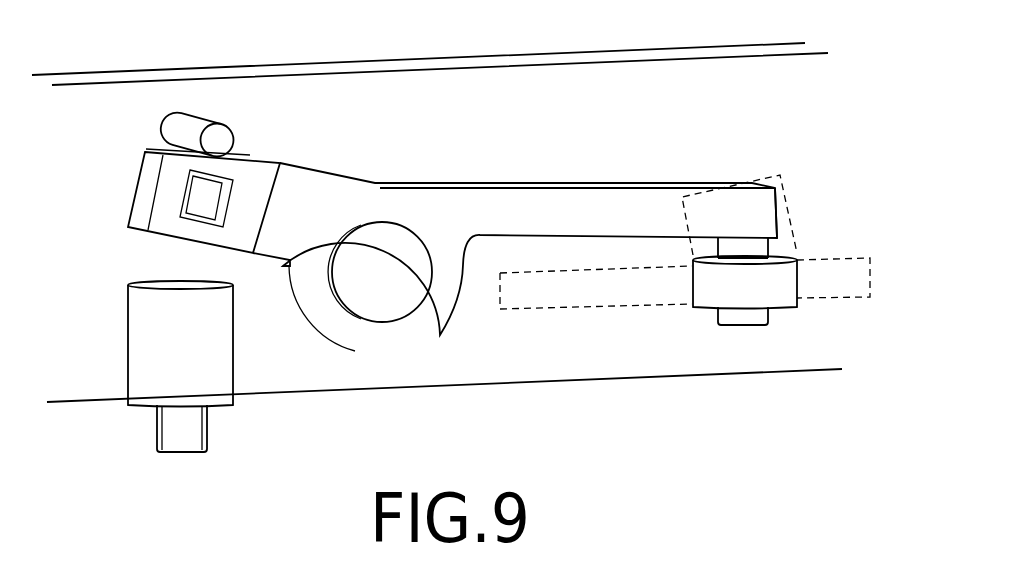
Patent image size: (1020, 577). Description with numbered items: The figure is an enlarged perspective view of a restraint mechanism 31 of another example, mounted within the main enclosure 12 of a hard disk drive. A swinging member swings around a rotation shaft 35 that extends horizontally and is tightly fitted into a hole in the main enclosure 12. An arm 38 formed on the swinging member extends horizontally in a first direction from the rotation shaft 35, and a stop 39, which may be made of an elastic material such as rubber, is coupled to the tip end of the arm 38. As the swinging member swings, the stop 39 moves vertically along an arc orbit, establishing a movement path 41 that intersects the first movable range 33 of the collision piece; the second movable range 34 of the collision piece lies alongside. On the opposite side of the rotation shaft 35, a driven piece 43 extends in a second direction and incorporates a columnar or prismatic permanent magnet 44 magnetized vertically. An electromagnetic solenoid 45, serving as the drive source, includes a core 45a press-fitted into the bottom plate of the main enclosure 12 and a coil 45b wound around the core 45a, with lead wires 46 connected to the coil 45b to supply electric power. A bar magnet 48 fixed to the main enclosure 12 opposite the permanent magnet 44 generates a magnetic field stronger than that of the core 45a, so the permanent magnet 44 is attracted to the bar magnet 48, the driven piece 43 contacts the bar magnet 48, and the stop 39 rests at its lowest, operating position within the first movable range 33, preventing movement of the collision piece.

The main enclosure 12 is at (197, 72).
The restraint mechanism 31 is at (472, 115).
The first movable range 33 is at (873, 248).
The second movable range 34 is at (587, 308).
The rotation shaft 35 is at (417, 310).
The arm 38 is at (622, 182).
The stop 39 is at (712, 307).
The movement path 41 is at (783, 200).
The driven piece 43 is at (287, 166).
The permanent magnet 44 is at (197, 190).
The electromagnetic solenoid 45 is at (196, 359).
The core 45a is at (190, 448).
The coil 45b is at (235, 368).
The lead wires 46 is at (203, 433).
The bar magnet 48 is at (216, 128).